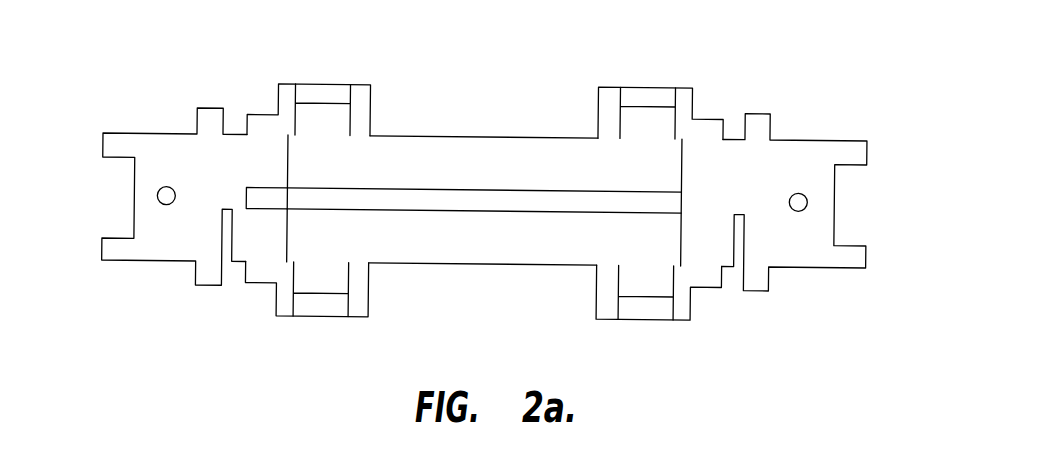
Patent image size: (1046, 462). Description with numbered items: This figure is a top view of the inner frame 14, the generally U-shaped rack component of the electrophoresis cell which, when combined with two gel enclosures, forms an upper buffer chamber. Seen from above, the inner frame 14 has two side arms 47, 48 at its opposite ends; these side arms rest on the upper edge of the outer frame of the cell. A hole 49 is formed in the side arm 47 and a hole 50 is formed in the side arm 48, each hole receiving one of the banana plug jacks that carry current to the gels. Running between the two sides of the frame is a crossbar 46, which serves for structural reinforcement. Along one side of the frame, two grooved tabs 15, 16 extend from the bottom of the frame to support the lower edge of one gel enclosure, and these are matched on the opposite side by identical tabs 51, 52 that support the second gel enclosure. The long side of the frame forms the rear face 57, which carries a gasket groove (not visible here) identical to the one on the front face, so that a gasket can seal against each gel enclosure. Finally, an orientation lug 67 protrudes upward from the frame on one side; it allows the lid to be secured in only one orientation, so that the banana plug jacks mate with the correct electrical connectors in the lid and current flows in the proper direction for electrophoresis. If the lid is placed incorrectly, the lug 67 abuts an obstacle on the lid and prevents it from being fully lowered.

The inner frame 14 is at (825, 68).
The grooved tab 15 is at (283, 301).
The grooved tab 16 is at (683, 303).
The crossbar 46 is at (508, 184).
The side arm 47 is at (158, 160).
The side arm 48 is at (803, 155).
The hole 49 is at (158, 195).
The hole 50 is at (808, 195).
The tab 51 is at (277, 100).
The tab 52 is at (690, 95).
The rear face 57 is at (453, 132).
The orientation lug 67 is at (267, 190).